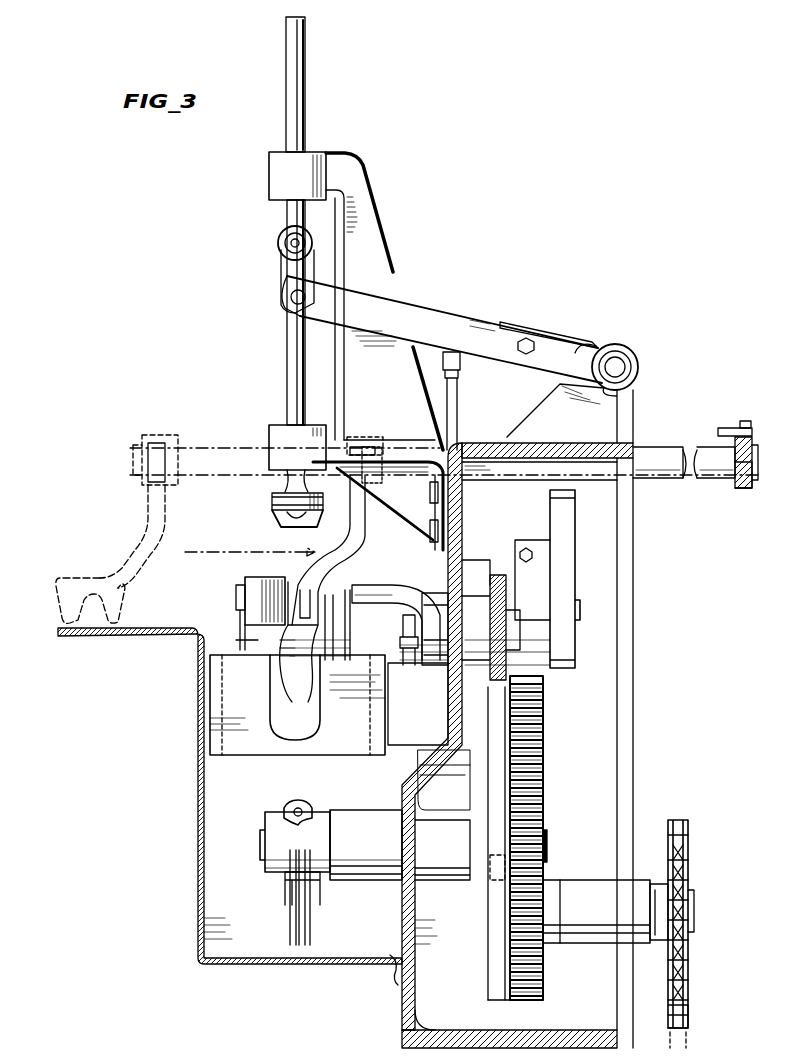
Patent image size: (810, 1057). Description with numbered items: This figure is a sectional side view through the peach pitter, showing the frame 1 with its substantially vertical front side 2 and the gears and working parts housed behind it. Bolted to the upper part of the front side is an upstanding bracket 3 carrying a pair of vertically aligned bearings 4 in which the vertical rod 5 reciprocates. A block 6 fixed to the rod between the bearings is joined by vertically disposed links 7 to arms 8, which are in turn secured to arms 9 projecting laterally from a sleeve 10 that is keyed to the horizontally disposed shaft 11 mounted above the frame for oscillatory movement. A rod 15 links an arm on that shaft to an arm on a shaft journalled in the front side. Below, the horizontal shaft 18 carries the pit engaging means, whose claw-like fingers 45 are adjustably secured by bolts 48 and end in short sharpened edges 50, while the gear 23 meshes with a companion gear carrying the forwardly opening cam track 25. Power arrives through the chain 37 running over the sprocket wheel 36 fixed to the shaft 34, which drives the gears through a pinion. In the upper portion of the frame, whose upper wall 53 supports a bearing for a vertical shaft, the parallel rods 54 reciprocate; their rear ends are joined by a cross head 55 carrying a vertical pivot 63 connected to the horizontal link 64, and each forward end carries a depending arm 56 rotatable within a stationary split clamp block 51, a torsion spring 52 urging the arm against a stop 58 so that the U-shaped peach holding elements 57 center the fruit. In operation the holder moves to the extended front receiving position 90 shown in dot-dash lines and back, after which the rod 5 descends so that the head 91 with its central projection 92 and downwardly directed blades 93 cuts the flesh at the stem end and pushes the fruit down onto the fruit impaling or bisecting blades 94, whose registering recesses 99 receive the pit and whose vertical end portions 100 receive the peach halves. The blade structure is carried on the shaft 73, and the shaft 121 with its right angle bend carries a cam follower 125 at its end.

The frame 1 is at (640, 439).
The front side 2 is at (448, 687).
The upstanding bracket 3 is at (387, 217).
The bearings 4 is at (269, 178).
The vertical rod 5 is at (300, 76).
The block 6 is at (278, 244).
The links 7 is at (283, 268).
The arms 8 is at (428, 323).
The arms 9 is at (548, 338).
The sleeve 10 is at (627, 346).
The shaft 11 is at (628, 366).
The rod 15 is at (459, 405).
The shaft 18 is at (547, 845).
The gear 23 is at (512, 906).
The cam track 25 is at (495, 937).
The shaft 34 is at (690, 910).
The sprocket wheel 36 is at (690, 838).
The chain 37 is at (690, 1012).
The claw-like finger 45 is at (312, 927).
The bolts 48 is at (284, 895).
The sharpened edges 50 is at (312, 942).
The split clamp block 51 is at (366, 437).
The torsion spring 52 is at (385, 450).
The upper wall 53 is at (542, 443).
The rods 54 is at (655, 452).
The cross head 55 is at (742, 465).
The depending arm 56 is at (366, 523).
The peach holding elements 57 is at (290, 582).
The stop 58 is at (378, 495).
The vertical pivot 63 is at (745, 421).
The link 64 is at (732, 428).
The shaft 73 is at (578, 635).
The extended front receiving position 90 is at (115, 555).
The head 91 is at (272, 497).
The central projection 92 is at (298, 522).
The blades 93 is at (273, 514).
The fruit impaling or bisecting blades 94 is at (357, 736).
The recesses 99 is at (270, 702).
The vertical end portions 100 is at (222, 755).
The shaft 121 is at (376, 585).
The cam follower 125 is at (410, 615).